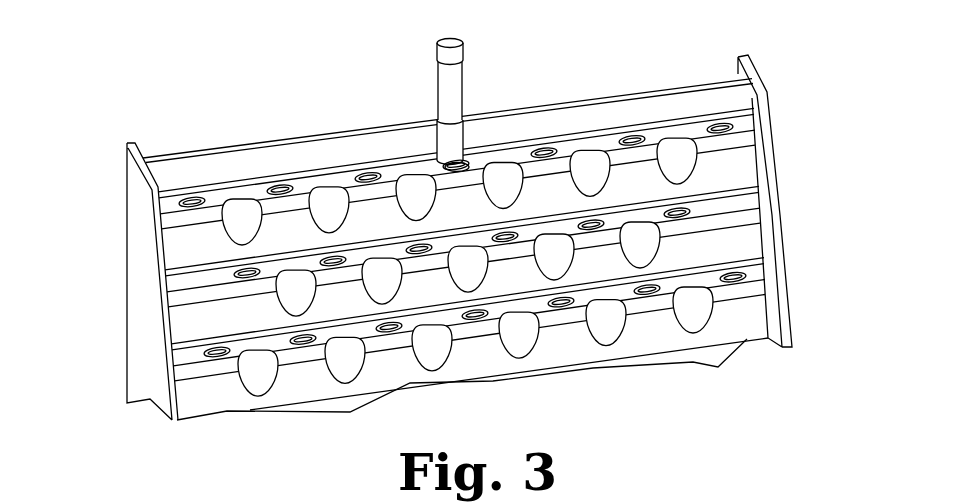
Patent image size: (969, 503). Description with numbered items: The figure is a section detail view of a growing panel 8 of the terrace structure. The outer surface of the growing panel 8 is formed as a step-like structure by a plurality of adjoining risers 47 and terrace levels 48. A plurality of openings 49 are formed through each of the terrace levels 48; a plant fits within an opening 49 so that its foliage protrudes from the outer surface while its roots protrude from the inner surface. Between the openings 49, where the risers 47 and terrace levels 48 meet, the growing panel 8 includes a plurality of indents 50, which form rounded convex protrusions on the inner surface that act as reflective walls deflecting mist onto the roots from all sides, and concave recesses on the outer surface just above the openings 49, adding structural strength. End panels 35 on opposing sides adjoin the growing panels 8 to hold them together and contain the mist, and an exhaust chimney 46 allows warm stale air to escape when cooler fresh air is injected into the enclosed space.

The growing panel 8 is at (462, 221).
The end panel 35 is at (147, 372).
The exhaust chimney 46 is at (452, 75).
The riser 47 is at (183, 317).
The terrace level 48 is at (597, 143).
The opening 49 is at (733, 117).
The indent 50 is at (330, 205).